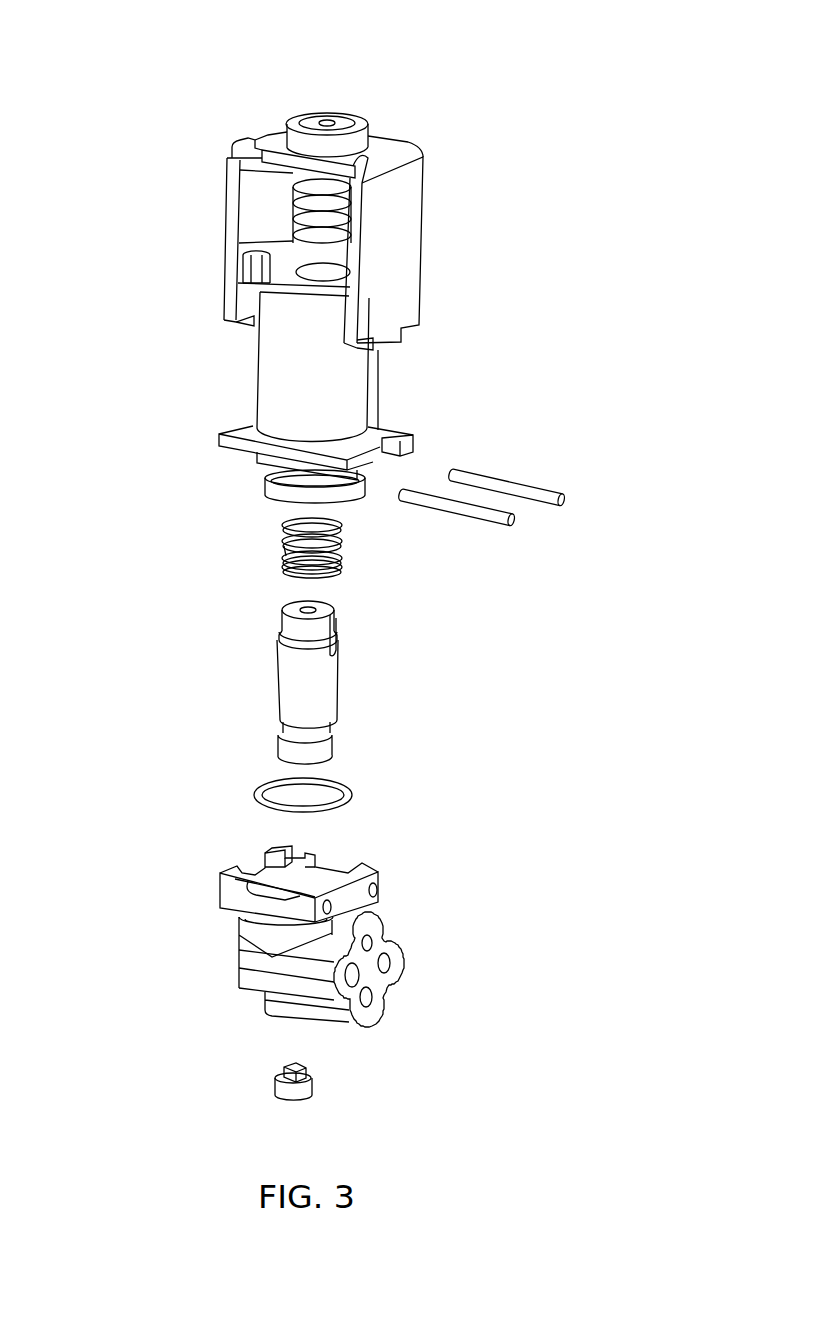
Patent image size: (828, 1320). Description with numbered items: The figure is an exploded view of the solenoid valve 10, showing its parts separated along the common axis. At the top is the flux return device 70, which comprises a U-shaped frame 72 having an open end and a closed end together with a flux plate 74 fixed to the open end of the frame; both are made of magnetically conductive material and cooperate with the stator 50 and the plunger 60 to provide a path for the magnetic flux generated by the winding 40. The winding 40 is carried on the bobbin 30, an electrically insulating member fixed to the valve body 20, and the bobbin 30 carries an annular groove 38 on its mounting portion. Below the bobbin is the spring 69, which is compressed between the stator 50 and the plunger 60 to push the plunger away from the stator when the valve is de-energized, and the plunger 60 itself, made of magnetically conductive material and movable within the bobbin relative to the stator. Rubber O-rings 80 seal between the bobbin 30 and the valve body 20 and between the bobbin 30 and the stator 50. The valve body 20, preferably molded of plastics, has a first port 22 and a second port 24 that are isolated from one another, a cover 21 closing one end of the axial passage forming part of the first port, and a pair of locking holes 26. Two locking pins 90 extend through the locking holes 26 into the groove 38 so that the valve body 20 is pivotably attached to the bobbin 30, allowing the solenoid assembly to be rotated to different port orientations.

The solenoid valve 10 is at (457, 132).
The valve body 20 is at (368, 972).
The cover 21 is at (277, 1083).
The first port 22 is at (368, 1008).
The second port 24 is at (367, 945).
The locking holes 26 is at (380, 892).
The bobbin 30 is at (260, 430).
The annular groove 38 is at (268, 479).
The winding 40 is at (283, 350).
The stator 50 is at (227, 158).
The plunger 60 is at (313, 682).
The spring 69 is at (284, 552).
The flux return device 70 is at (523, 268).
The U-shaped frame 72 is at (397, 275).
The flux plate 74 is at (388, 438).
The O-rings 80 is at (285, 247).
The locking pins 90 is at (517, 518).